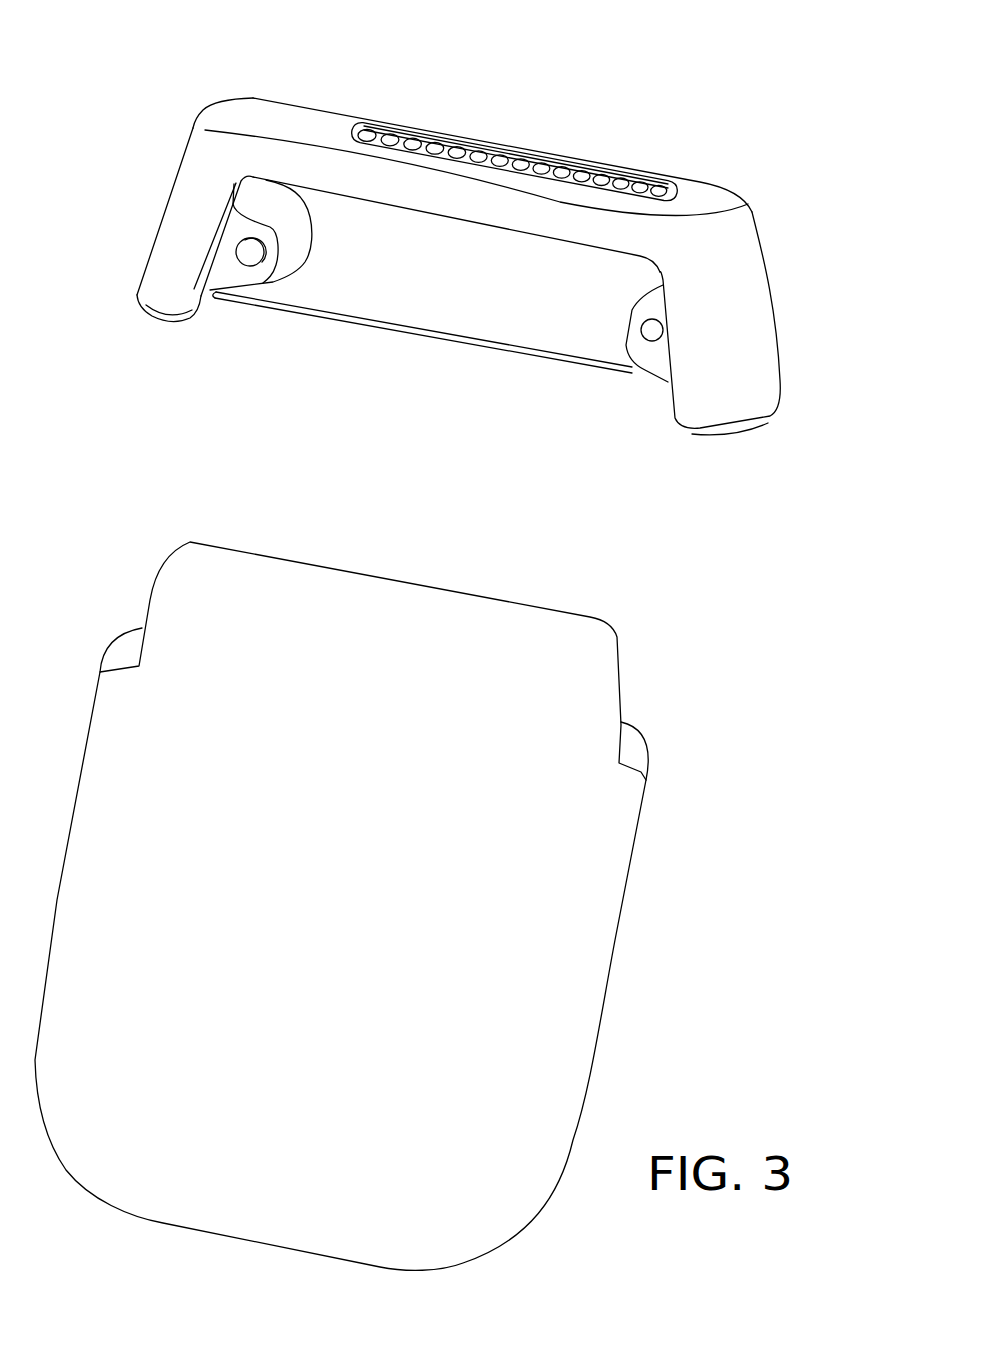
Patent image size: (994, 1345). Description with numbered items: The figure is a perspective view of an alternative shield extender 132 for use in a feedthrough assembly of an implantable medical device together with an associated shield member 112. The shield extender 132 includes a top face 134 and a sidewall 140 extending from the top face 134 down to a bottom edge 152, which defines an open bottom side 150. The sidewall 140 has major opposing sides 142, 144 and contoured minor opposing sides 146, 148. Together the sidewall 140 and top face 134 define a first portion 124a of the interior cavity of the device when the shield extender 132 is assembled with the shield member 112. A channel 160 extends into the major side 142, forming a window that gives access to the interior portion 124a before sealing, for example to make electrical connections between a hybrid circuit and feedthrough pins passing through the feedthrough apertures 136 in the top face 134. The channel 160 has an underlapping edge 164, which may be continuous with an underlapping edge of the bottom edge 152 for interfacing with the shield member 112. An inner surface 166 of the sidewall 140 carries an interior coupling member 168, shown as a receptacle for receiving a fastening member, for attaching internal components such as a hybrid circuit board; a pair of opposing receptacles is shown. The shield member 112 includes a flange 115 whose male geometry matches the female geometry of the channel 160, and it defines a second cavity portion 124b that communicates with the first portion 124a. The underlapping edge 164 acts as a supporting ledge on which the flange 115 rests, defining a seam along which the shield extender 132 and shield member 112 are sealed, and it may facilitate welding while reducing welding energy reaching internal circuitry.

The shield extender 132 is at (470, 40).
The top face 134 is at (707, 200).
The feedthrough apertures 136 is at (515, 165).
The sidewall 140 is at (213, 141).
The minor side 148 is at (163, 187).
The major side 142 is at (167, 280).
The underlapping edge 164 is at (192, 310).
The inner surface 166 is at (230, 298).
The interior coupling member 168 is at (265, 278).
The major side 144 is at (470, 312).
The open bottom side 150 is at (390, 360).
The first portion of interior cavity 124a is at (597, 268).
The minor side 146 is at (780, 363).
The bottom edge 152 is at (713, 434).
The channel 160 is at (665, 386).
The shield member 112 is at (635, 843).
The flange 115 is at (148, 610).
The second portion of interior cavity 124b is at (627, 737).